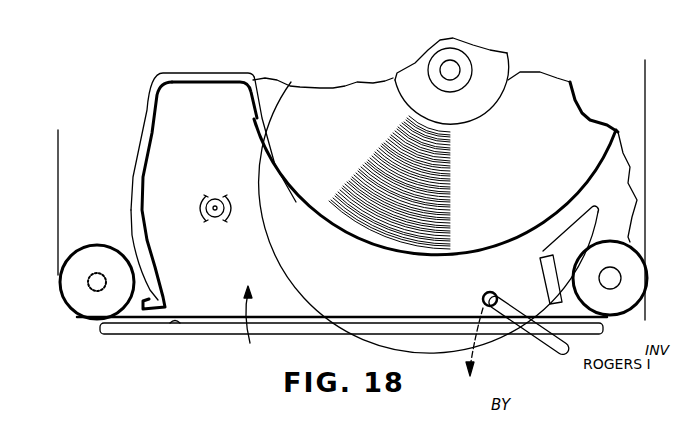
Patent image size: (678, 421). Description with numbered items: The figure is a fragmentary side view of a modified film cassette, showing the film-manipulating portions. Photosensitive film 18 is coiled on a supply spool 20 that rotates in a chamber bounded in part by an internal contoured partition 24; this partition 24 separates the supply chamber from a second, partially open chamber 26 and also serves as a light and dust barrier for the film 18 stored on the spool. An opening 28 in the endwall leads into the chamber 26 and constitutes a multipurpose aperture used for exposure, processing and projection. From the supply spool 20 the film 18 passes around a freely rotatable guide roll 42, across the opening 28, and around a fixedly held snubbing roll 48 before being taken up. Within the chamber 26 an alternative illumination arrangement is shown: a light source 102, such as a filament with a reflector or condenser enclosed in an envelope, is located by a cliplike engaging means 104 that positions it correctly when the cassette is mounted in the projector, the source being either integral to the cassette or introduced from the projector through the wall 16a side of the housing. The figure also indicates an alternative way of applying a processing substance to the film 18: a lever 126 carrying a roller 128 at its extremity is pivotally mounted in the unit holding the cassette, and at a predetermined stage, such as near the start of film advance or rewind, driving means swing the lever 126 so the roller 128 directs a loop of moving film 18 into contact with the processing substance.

The wall 16a is at (275, 268).
The film 18 is at (538, 126).
The supply spool 20 is at (510, 83).
The partition 24 is at (327, 242).
The chamber 26 is at (247, 327).
The opening 28 is at (177, 327).
The guide roll 42 is at (638, 278).
The snubbing roll 48 is at (77, 298).
The light source 102 is at (204, 203).
The cliplike engaging means 104 is at (227, 204).
The lever 126 is at (540, 348).
The roller 128 is at (483, 299).